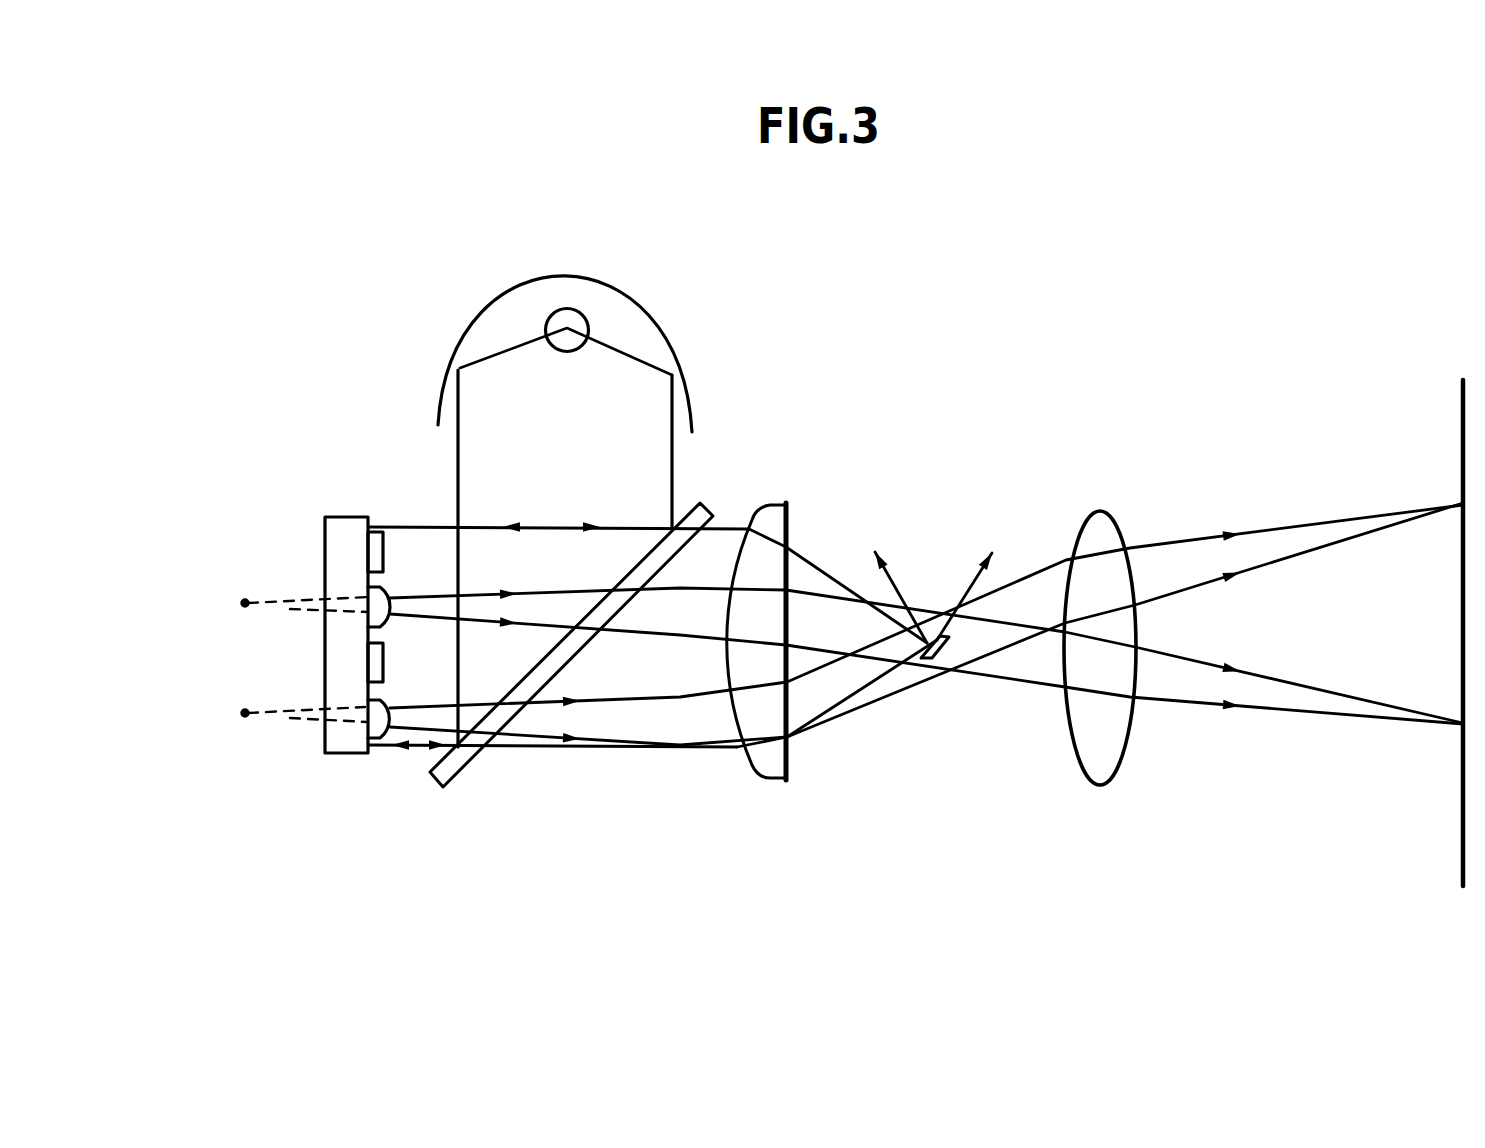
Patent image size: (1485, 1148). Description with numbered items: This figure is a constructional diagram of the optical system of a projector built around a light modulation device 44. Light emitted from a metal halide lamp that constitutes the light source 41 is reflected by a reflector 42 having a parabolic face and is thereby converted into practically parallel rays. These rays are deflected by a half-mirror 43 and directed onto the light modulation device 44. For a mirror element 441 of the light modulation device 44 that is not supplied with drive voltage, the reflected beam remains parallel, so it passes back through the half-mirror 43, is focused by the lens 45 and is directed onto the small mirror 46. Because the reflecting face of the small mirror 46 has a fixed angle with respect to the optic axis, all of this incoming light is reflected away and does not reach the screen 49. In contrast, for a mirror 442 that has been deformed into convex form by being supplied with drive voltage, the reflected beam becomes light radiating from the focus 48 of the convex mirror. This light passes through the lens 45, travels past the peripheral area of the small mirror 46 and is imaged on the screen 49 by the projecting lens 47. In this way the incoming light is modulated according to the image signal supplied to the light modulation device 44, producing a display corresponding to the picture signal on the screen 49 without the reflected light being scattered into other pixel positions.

The light source 41 is at (657, 337).
The reflector 42 is at (581, 313).
The half-mirror 43 is at (455, 768).
The light modulation device 44 is at (283, 546).
The mirror element 441 is at (358, 547).
The mirror 442 is at (368, 598).
The lens 45 is at (765, 782).
The small mirror 46 is at (941, 660).
The projecting lens 47 is at (1100, 776).
The focus 48 is at (245, 717).
The screen 49 is at (1460, 835).